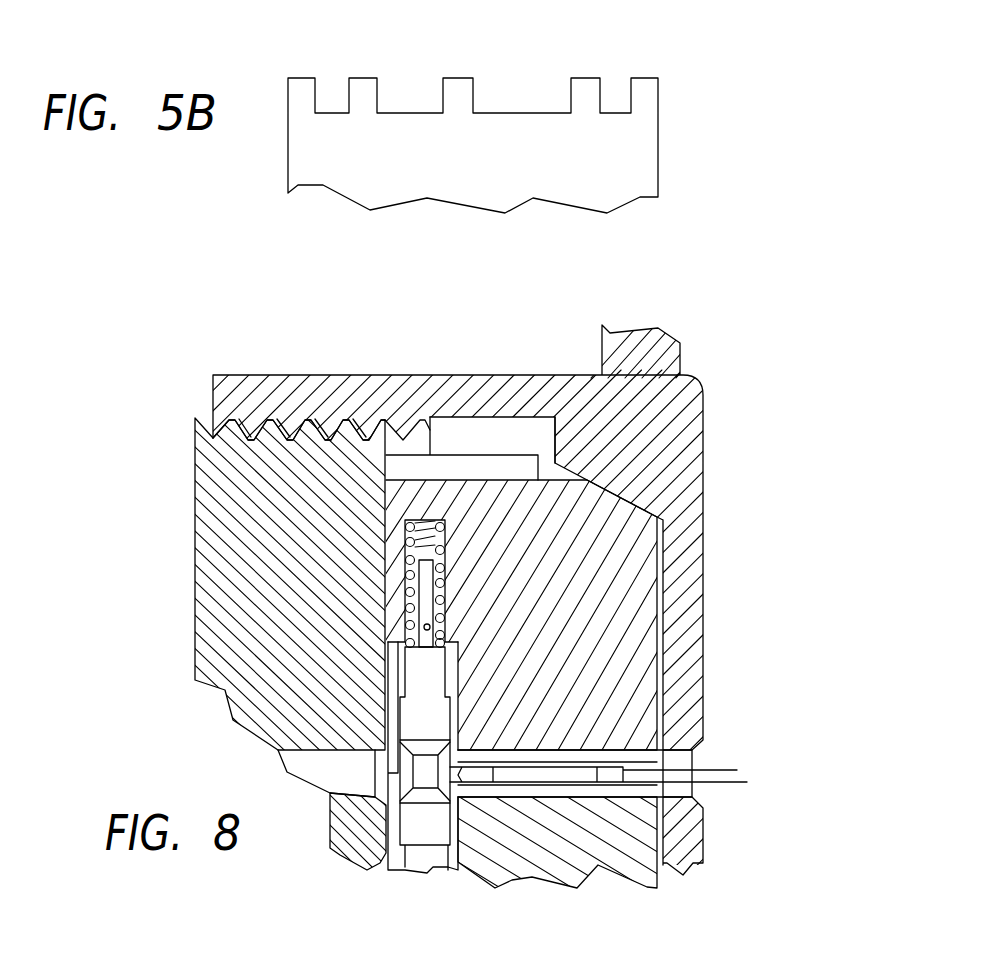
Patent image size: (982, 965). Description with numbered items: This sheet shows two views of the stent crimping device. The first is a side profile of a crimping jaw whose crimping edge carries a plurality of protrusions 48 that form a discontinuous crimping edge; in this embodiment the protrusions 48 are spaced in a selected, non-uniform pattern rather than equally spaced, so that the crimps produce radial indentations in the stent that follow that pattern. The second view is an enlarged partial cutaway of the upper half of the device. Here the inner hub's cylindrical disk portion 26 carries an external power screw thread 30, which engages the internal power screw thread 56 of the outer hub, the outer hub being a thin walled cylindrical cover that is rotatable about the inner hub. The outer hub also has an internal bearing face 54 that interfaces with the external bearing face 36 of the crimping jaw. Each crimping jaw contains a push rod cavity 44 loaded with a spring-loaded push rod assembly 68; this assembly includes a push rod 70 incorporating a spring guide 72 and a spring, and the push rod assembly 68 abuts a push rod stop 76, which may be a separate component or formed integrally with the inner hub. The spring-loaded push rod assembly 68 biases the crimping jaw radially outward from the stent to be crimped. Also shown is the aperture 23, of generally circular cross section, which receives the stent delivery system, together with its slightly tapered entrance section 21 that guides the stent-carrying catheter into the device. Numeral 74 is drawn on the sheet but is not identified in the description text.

In FIG. 5B, the protrusions 48 is at (590, 78).
In FIG. 8, the cylindrical disk portion 26 is at (195, 492).
In FIG. 8, the external power screw thread 30 is at (213, 437).
In FIG. 8, the external bearing face 36 is at (627, 498).
In FIG. 8, the push rod cavity 44 is at (425, 520).
In FIG. 8, the internal bearing face 54 is at (575, 468).
In FIG. 8, the internal power screw thread 56 is at (345, 437).
In FIG. 8, the spring-loaded push rod assembly 68 is at (397, 675).
In FIG. 8, the push rod 70 is at (430, 684).
In FIG. 8, the spring guide 72 is at (424, 627).
In FIG. 8, the spring bore 74 is at (405, 568).
In FIG. 8, the push rod stop 76 is at (428, 738).
In FIG. 8, the tapered entrance section 21 is at (700, 750).
In FIG. 8, the aperture 23 is at (703, 795).